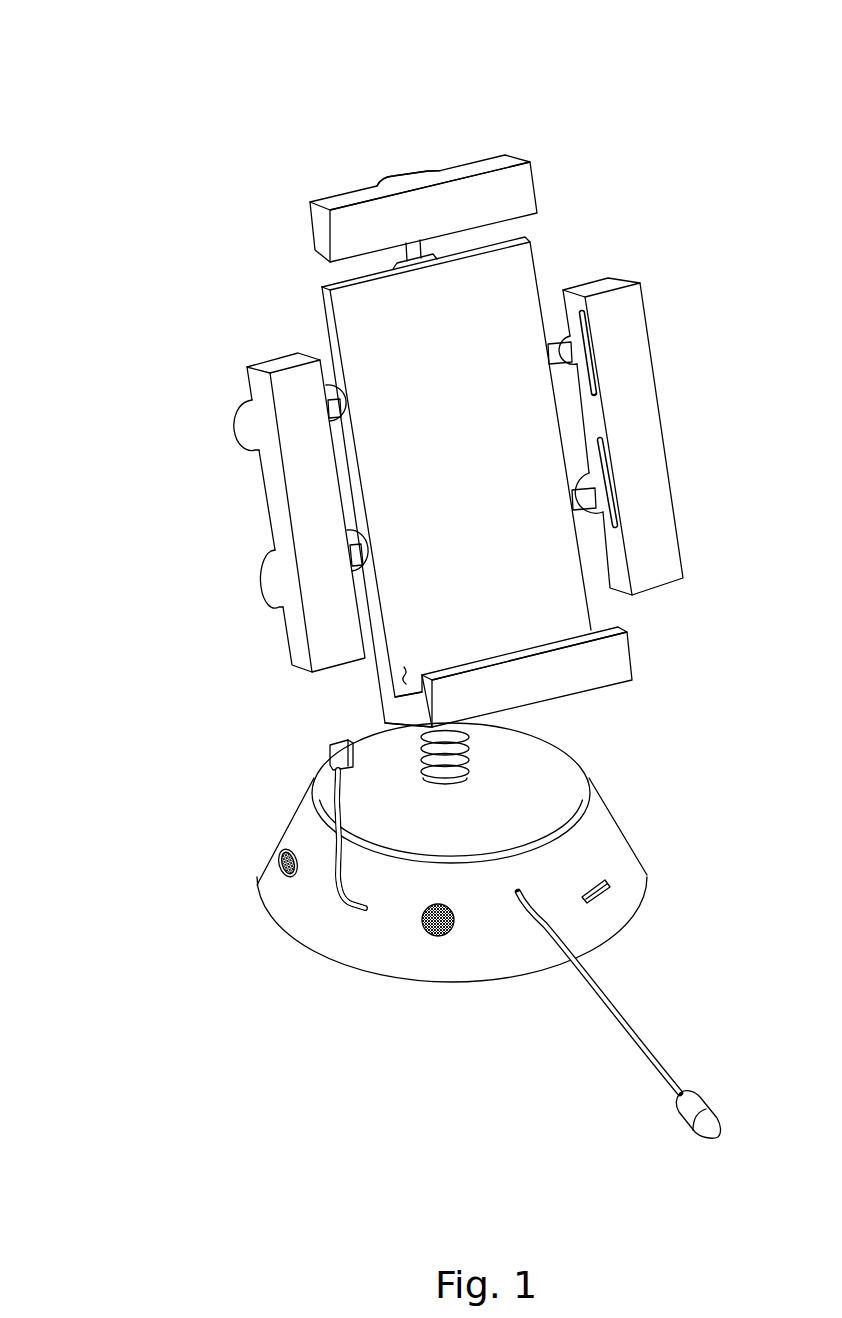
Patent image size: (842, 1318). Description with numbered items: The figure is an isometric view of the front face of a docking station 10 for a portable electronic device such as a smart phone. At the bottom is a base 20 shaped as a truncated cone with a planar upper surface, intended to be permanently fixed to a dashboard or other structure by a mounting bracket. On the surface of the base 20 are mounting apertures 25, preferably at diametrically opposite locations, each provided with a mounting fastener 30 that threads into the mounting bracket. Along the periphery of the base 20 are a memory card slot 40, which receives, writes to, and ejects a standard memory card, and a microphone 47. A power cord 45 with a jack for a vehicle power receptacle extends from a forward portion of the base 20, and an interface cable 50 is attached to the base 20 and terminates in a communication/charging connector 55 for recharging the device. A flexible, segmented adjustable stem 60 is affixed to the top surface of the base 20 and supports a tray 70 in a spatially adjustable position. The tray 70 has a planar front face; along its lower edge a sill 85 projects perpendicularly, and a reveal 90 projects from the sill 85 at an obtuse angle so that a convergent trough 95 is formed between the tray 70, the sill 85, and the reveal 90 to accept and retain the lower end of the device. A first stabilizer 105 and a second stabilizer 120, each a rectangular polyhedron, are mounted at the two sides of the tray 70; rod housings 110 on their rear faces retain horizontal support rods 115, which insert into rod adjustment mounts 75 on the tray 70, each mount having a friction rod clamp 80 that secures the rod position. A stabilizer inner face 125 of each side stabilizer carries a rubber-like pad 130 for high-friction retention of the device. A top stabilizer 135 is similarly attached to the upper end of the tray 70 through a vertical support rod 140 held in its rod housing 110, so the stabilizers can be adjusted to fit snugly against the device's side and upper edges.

The docking station 10 is at (116, 163).
The base 20 is at (310, 933).
The mounting aperture 25 is at (277, 870).
The mounting fastener 30 is at (277, 860).
The memory card slot 40 is at (605, 897).
The power cord 45 is at (610, 1023).
The microphone 47 is at (430, 934).
The interface cable 50 is at (335, 802).
The communication/charging connector 55 is at (329, 750).
The adjustable stem 60 is at (471, 762).
The tray 70 is at (523, 285).
The rod adjustment mount 75 is at (433, 258).
The rod clamp 80 is at (330, 418).
The sill 85 is at (403, 712).
The reveal 90 is at (624, 652).
The trough 95 is at (402, 679).
The first stabilizer 105 is at (630, 311).
The rod housing 110 is at (393, 183).
The horizontal support rod 115 is at (563, 352).
The second stabilizer 120 is at (283, 358).
The stabilizer inner face 125 is at (595, 421).
The pad 130 is at (588, 378).
The top stabilizer 135 is at (518, 188).
The vertical support rod 140 is at (412, 248).